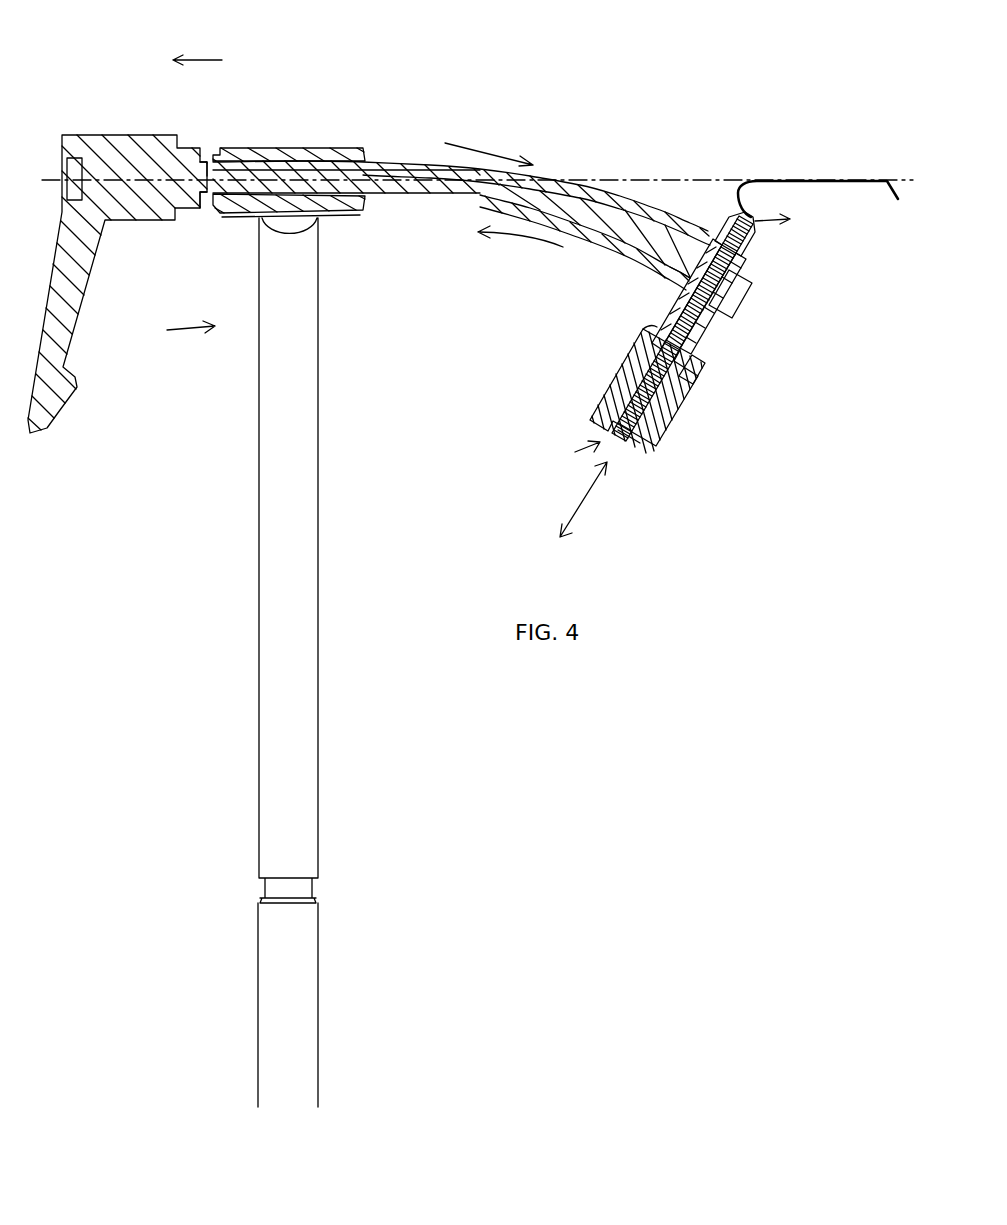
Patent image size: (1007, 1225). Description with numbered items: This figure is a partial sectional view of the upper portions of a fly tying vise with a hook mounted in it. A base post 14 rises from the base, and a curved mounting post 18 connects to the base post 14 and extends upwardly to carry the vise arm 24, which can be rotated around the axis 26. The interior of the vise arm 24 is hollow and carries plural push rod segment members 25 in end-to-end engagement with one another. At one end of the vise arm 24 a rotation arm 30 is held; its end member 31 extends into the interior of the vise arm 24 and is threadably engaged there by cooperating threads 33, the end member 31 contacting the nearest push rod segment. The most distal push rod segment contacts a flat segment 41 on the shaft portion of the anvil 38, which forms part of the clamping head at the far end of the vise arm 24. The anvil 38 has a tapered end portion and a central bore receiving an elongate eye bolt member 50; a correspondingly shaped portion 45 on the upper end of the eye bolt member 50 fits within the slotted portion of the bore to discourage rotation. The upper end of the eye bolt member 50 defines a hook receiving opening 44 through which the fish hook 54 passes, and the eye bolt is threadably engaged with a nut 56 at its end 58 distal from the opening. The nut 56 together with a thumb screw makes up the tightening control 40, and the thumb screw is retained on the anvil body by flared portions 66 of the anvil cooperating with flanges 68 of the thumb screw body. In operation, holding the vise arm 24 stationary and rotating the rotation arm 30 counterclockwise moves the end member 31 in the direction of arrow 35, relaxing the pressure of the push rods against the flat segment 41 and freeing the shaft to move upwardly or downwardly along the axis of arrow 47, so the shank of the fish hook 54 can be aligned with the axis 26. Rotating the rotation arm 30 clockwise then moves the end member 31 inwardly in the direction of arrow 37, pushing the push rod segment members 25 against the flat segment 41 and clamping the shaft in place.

The base post 14 is at (318, 967).
The curved mounting post 18 is at (318, 795).
The vise arm 24 is at (570, 181).
The push rod segment members 25 is at (333, 170).
The axis 26 is at (643, 180).
The rotation arm 30 is at (82, 307).
The end member 31 is at (212, 192).
The cooperating threads 33 is at (208, 158).
The arrow 35 is at (202, 60).
The arrow 37 is at (178, 333).
The anvil 38 is at (753, 240).
The tightening control 40 is at (672, 426).
The flat segment 41 is at (677, 298).
The hook receiving opening 44 is at (743, 224).
The correspondingly shaped portion 45 is at (698, 250).
The arrow 47 is at (588, 497).
The eye bolt member 50 is at (707, 333).
The fish hook 54 is at (808, 181).
The nut 56 is at (643, 443).
The end 58 is at (568, 453).
The flared portions 66 is at (694, 386).
The flanges 68 is at (643, 330).